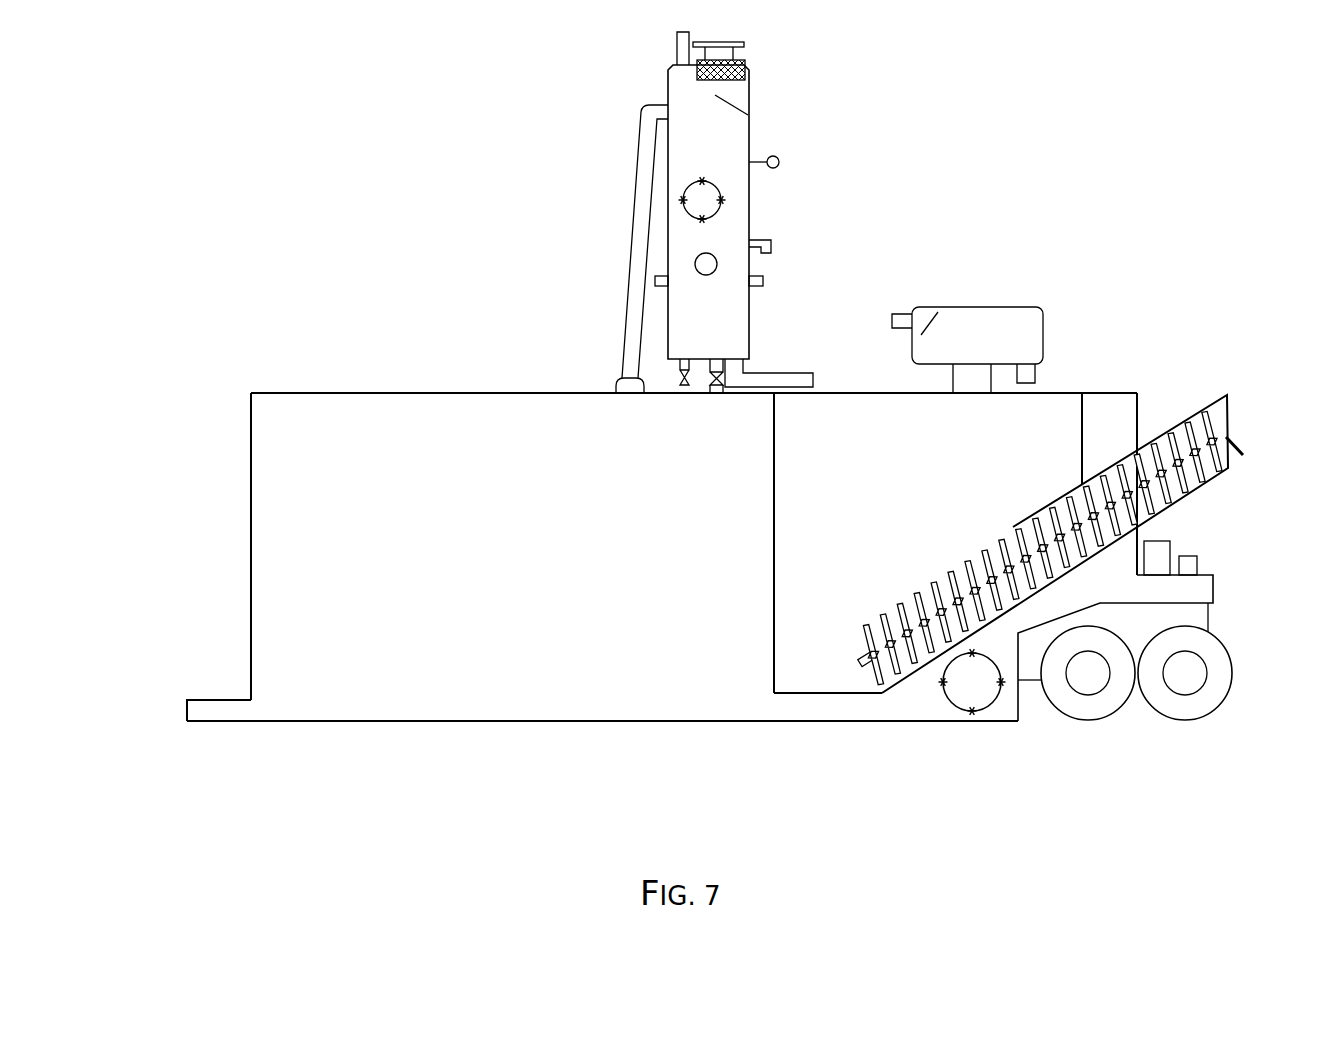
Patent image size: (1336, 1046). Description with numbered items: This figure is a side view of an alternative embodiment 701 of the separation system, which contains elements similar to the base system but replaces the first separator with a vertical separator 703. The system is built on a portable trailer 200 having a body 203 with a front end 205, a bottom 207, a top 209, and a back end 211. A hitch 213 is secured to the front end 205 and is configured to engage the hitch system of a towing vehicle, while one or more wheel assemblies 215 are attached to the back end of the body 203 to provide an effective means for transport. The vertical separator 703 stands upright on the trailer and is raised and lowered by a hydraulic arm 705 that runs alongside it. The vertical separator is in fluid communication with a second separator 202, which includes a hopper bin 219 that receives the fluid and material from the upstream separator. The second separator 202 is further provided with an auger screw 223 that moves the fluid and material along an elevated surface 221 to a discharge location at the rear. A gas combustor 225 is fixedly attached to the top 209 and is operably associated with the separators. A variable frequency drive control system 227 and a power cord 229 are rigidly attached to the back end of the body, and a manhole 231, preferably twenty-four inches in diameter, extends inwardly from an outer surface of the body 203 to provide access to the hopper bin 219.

The embodiment 701 is at (198, 182).
The vertical separator 703 is at (562, 80).
The hydraulic arm 705 is at (634, 212).
The portable trailer 200 is at (205, 416).
The second separator 202 is at (752, 703).
The body 203 is at (251, 491).
The front end 205 is at (249, 580).
The bottom 207 is at (574, 722).
The top 209 is at (432, 393).
The back end 211 is at (1140, 405).
The hitch 213 is at (187, 705).
The wheel assemblies 215 is at (1150, 733).
The hopper bin 219 is at (773, 535).
The elevated surface 221 is at (995, 607).
The auger screw 223 is at (1226, 413).
The gas combustor 225 is at (1022, 282).
The variable frequency drive control system 227 is at (1170, 545).
The power cord 229 is at (1198, 560).
The manhole 231 is at (985, 705).